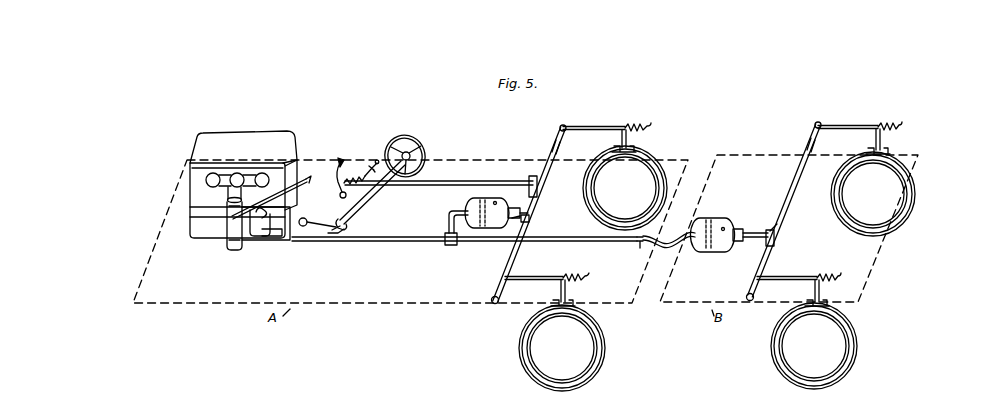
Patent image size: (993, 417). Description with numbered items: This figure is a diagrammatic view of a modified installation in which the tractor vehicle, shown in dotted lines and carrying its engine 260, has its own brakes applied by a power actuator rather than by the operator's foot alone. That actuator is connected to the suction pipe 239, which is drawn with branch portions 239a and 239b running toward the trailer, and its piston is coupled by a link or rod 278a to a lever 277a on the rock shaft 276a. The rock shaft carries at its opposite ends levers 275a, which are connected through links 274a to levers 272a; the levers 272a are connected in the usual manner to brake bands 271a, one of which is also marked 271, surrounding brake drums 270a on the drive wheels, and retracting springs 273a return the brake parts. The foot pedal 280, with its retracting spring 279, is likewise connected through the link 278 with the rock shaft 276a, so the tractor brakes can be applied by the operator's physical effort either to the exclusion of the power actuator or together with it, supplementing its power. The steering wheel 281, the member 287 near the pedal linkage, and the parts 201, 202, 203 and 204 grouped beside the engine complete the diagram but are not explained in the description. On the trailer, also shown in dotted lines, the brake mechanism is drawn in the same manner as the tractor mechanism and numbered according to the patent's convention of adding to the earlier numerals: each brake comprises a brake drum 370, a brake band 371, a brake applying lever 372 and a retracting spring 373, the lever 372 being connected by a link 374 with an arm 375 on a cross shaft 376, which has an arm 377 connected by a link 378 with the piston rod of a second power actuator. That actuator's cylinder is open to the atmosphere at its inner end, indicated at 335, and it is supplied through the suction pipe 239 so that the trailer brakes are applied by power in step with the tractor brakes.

The fuel tank 260 is at (247, 142).
The filler fitting 201 is at (205, 182).
The coupling 202 is at (230, 224).
The bracket frame 203 is at (236, 252).
The control rod 204 is at (288, 212).
The foot pedal 280 is at (340, 158).
The spring 279 is at (349, 176).
The steering wheel 281 is at (411, 157).
The link 278 is at (389, 183).
The link 287 is at (352, 233).
The suction pipe 239 is at (436, 242).
The flexible pipe 239a is at (672, 246).
The pipe branch 239b is at (628, 250).
The rock shaft 276a is at (530, 209).
The lever 277a is at (530, 219).
The link or rod 278a is at (510, 220).
The levers 275a is at (575, 120).
The links 274a is at (606, 125).
The spring 273a is at (648, 127).
The levers 272a is at (621, 140).
The brake drum rim 271 is at (583, 189).
The brake drums 270a is at (623, 165).
The brake bands 271a is at (562, 391).
The cylinder 335 is at (728, 226).
The piston rod 378 is at (752, 240).
The joint 377 is at (775, 240).
The lever arm 376 is at (780, 219).
The brake rod 375 is at (814, 128).
The brake bar 374 is at (848, 125).
The spring 373 is at (892, 122).
The brake link 372 is at (881, 140).
The wheel brake band 370 is at (848, 193).
The brake drum rim 371 is at (895, 195).